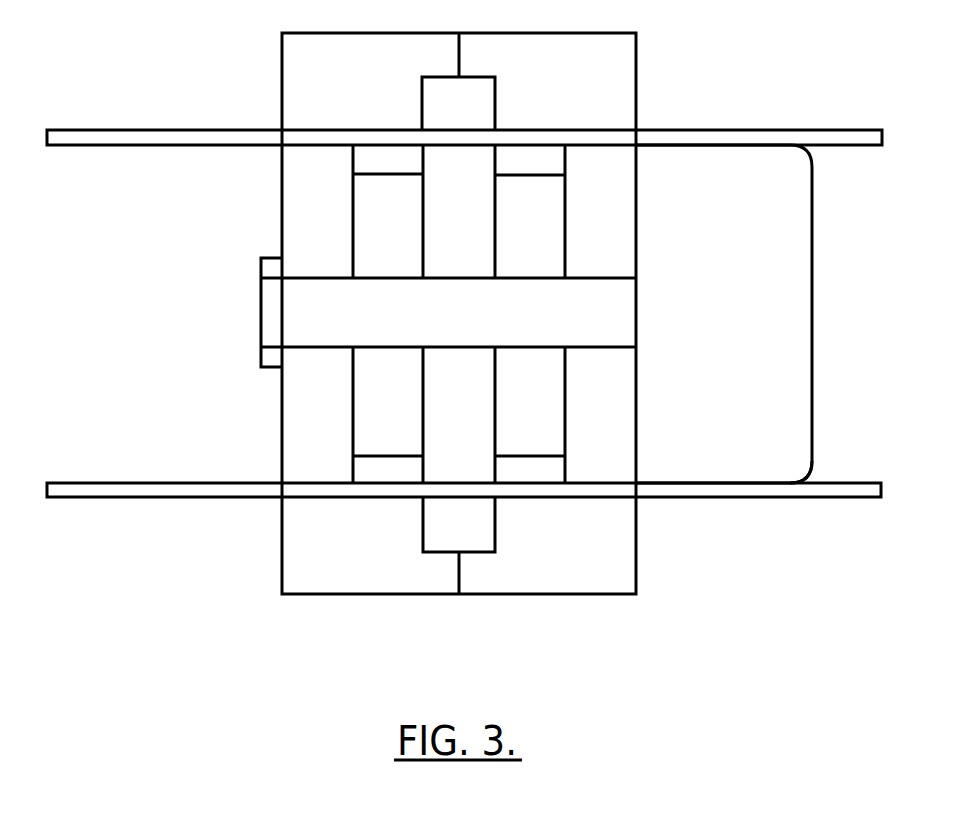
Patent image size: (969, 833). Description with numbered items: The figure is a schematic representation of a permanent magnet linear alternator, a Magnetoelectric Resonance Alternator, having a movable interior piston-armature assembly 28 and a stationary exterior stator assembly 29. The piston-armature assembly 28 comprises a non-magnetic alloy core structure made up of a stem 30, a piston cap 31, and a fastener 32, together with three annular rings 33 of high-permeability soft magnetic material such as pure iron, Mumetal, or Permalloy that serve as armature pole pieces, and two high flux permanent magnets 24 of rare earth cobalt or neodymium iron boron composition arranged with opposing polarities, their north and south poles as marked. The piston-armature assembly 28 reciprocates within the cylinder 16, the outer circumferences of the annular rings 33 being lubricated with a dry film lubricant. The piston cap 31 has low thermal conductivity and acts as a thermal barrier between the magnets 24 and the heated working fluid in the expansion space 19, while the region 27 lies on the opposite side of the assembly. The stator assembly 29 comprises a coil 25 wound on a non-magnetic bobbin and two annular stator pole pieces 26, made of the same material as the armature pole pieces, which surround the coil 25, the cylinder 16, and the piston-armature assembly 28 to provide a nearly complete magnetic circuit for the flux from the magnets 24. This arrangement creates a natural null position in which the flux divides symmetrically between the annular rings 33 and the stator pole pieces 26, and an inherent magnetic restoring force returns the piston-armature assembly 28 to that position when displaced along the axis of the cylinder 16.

The cylinder 16 is at (697, 502).
The expansion space 19 is at (848, 334).
The permanent magnets 24 is at (378, 226).
The coil 25 is at (447, 534).
The stator pole pieces 26 is at (353, 559).
The left region 27 is at (164, 334).
The piston-armature assembly 28 is at (815, 486).
The stator assembly 29 is at (562, 600).
The stem 30 is at (445, 322).
The piston cap 31 is at (718, 322).
The fastener 32 is at (269, 360).
The annular rings 33 is at (306, 226).